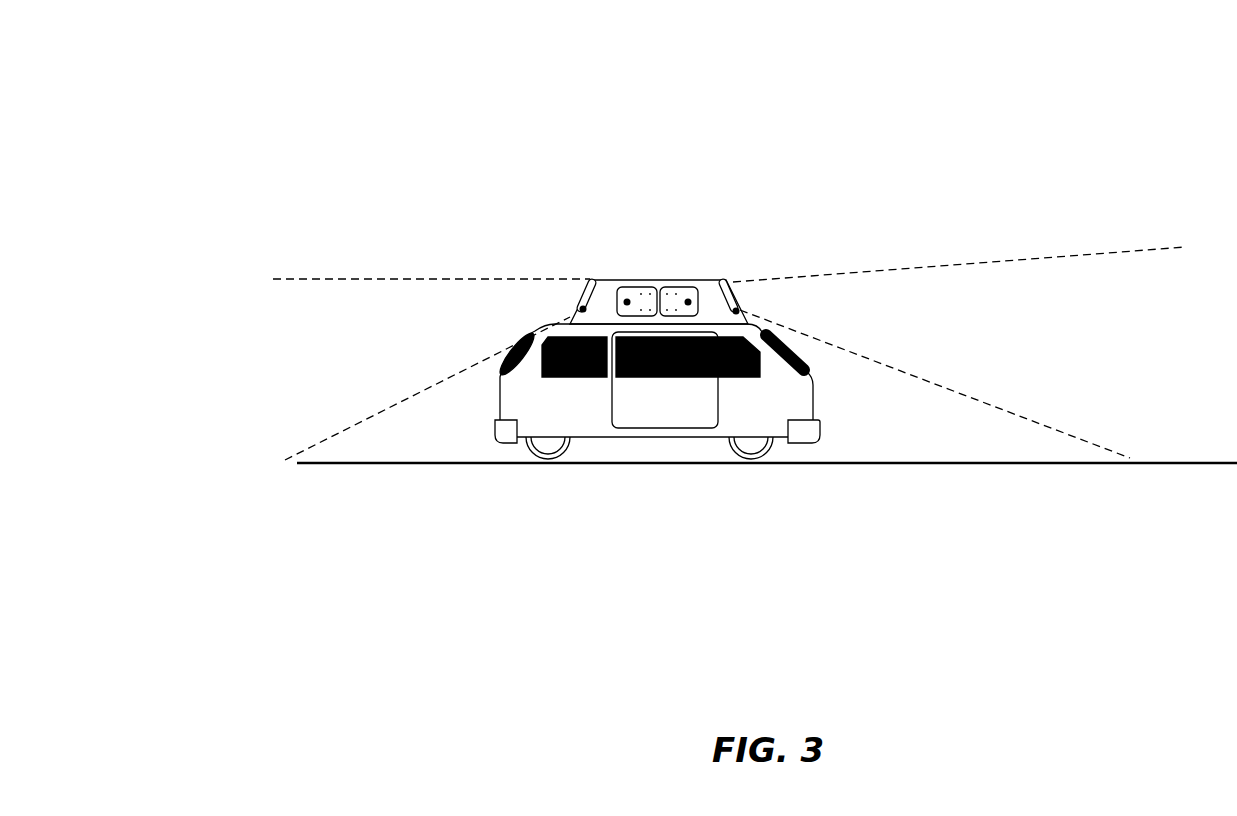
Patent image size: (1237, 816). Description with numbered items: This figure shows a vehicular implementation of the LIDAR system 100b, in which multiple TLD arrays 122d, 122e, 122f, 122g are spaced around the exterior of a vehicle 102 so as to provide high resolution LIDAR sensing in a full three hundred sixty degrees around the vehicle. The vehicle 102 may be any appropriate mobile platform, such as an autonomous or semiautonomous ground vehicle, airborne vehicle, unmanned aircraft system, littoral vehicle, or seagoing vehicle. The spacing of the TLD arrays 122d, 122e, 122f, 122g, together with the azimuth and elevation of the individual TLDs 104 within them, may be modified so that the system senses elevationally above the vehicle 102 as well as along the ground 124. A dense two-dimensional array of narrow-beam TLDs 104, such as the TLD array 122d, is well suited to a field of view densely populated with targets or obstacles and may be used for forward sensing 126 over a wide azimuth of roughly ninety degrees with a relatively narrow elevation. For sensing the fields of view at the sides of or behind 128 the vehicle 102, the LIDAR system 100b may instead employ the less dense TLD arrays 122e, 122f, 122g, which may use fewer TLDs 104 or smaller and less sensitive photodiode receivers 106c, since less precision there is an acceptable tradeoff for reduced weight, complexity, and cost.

The LIDAR system 100b is at (282, 78).
The vehicle 102 is at (517, 400).
The TLD 104 is at (733, 288).
The photodiode receiver 106c is at (580, 308).
The TLD array 122d is at (737, 300).
The TLD array 122e is at (678, 287).
The TLD array 122f is at (637, 287).
The TLD array 122g is at (581, 298).
The ground 124 is at (952, 465).
The forward sensing 126 is at (953, 345).
The sensing behind the vehicle 128 is at (367, 300).